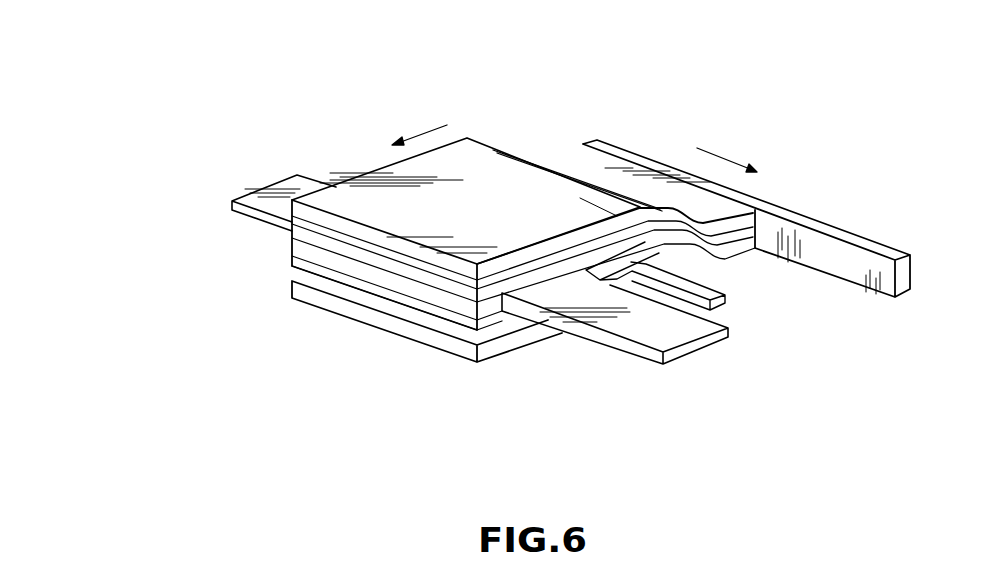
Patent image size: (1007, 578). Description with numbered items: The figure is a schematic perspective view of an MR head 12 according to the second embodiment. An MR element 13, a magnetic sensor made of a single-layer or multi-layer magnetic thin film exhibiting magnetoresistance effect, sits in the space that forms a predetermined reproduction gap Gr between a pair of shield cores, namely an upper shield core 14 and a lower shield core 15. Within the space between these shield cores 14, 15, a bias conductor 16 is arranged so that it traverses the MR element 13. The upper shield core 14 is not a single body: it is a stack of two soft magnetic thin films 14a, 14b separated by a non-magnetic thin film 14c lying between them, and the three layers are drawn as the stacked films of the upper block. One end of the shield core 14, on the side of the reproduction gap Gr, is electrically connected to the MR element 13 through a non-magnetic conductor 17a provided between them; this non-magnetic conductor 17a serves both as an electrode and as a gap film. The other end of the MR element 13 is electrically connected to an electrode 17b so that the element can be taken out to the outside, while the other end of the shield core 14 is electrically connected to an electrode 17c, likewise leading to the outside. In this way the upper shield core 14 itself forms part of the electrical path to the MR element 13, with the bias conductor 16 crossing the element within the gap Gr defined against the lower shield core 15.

The MR head 12 is at (344, 134).
The MR element 13 is at (512, 317).
The upper shield core 14 is at (743, 20).
The soft magnetic thin film 14a is at (503, 242).
The soft magnetic thin film 14b is at (542, 273).
The non-magnetic thin film 14c is at (527, 255).
The lower shield core 15 is at (380, 320).
The bias conductor 16 is at (660, 342).
The non-magnetic conductor 17a is at (312, 262).
The electrode 17b is at (708, 303).
The electrode 17c is at (815, 225).
The reproduction gap Gr is at (285, 238).